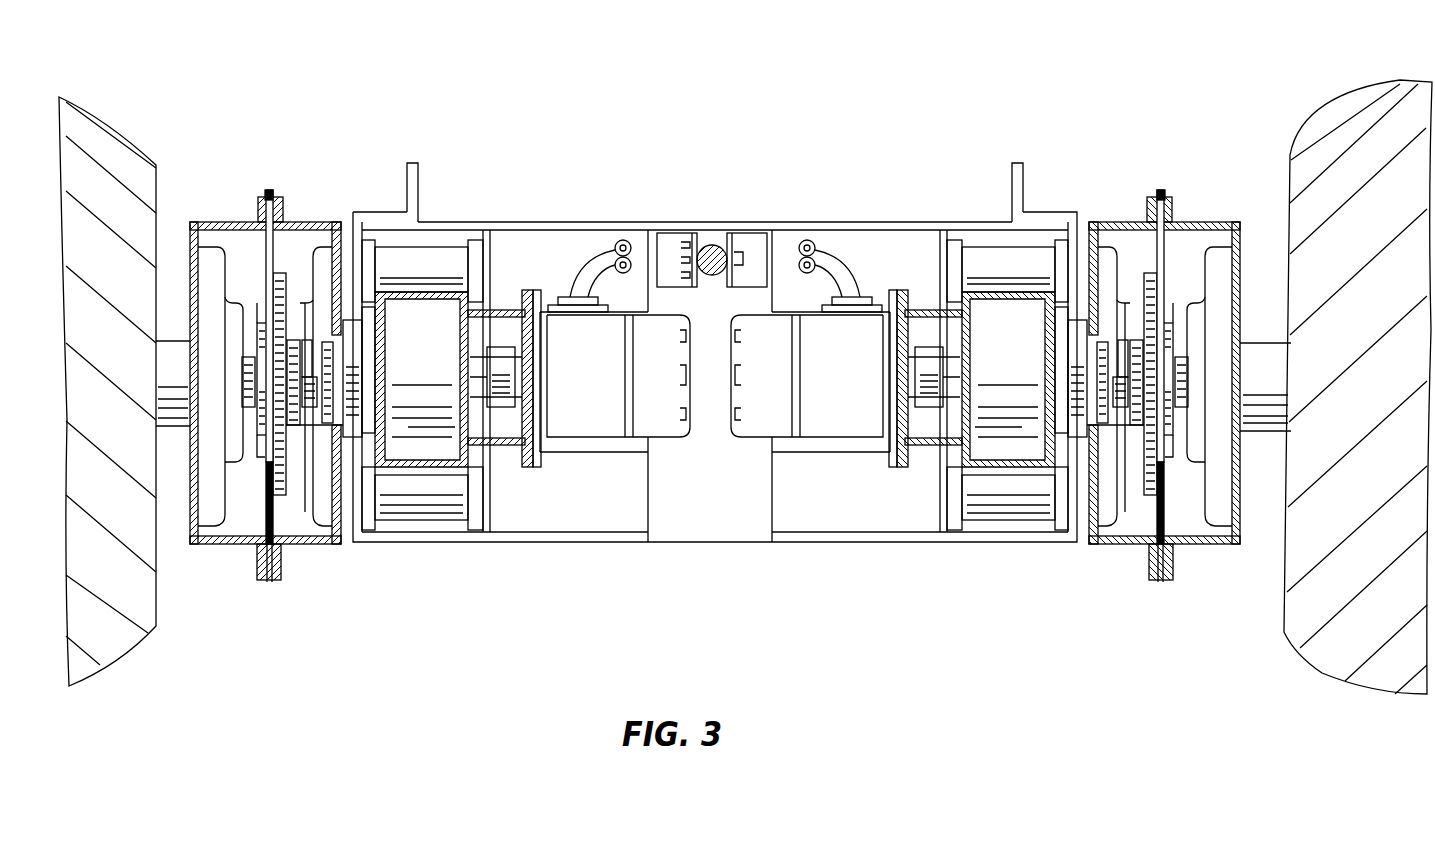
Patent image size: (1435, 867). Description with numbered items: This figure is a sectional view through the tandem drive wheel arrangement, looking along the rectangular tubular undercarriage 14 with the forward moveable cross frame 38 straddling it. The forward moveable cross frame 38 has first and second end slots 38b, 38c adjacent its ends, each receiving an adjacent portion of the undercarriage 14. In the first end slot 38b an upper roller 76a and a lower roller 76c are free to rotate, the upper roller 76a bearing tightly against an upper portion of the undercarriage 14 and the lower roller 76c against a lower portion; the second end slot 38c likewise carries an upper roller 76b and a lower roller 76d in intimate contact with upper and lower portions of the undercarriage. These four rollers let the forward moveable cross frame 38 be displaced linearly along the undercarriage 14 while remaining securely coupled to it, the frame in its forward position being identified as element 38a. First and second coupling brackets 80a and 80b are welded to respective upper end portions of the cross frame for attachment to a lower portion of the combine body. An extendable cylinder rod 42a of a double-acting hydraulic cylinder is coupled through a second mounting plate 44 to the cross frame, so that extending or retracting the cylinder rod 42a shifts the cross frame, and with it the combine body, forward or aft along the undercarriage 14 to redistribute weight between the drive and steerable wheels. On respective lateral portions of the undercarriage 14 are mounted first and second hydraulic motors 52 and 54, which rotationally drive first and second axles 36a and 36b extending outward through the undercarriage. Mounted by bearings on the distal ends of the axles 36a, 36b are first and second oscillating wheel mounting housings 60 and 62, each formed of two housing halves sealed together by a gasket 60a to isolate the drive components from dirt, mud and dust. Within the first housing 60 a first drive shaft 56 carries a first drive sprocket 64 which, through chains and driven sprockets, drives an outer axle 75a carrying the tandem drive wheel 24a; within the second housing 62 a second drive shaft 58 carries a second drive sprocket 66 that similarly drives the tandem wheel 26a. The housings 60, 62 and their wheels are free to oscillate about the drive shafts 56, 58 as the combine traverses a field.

The tandem drive wheel 24a is at (122, 138).
The tandem wheel 26a is at (1327, 113).
The first oscillating wheel mounting housing 60 is at (213, 224).
The gasket 60a is at (268, 197).
The second oscillating wheel mounting housing 62 is at (1110, 222).
The first drive sprocket 64 is at (278, 546).
The second drive sprocket 66 is at (1152, 546).
The first drive shaft 56 is at (286, 427).
The second drive shaft 58 is at (1137, 428).
The outer axle 75a is at (177, 420).
The first coupling bracket 80a is at (413, 164).
The second coupling bracket 80b is at (1025, 162).
The forward moveable cross frame 38 is at (613, 222).
The forward moveable cross frame in forward position 38a is at (707, 508).
The first end slot 38b is at (400, 534).
The second end slot 38c is at (1010, 527).
The upper roller 76a is at (440, 258).
The upper roller 76b is at (973, 267).
The lower roller 76c is at (453, 478).
The lower roller 76d is at (967, 495).
The first axle 36a is at (440, 368).
The second axle 36b is at (1033, 364).
The first hydraulic motor 52 is at (596, 378).
The second hydraulic motor 54 is at (849, 383).
The second mounting plate 44 is at (670, 243).
The cylinder rod 42a is at (714, 245).
The undercarriage 14 is at (443, 500).